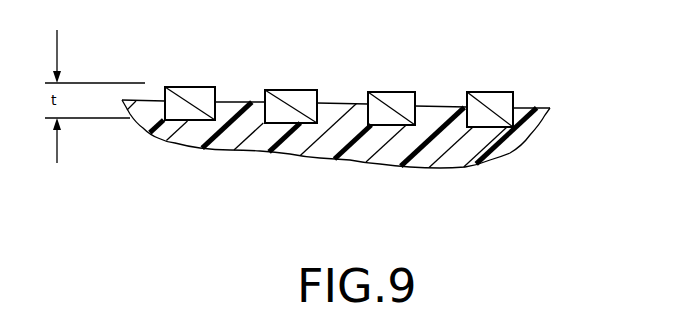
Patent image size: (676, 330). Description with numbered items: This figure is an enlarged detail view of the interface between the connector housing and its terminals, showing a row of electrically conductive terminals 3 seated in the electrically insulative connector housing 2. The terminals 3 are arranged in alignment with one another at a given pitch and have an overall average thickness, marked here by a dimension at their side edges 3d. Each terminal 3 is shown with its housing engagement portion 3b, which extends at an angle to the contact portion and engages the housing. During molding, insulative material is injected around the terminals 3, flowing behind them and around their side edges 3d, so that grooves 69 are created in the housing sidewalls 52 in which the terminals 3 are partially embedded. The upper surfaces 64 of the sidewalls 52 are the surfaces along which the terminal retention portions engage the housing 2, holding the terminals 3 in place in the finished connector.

The connector housing 2 is at (414, 180).
The terminals 3 is at (181, 74).
The housing engagement portions 3b is at (494, 92).
The side edges 3d is at (517, 108).
The sidewalls 52 is at (210, 160).
The upper surfaces 64 is at (443, 106).
The grooves 69 is at (366, 102).